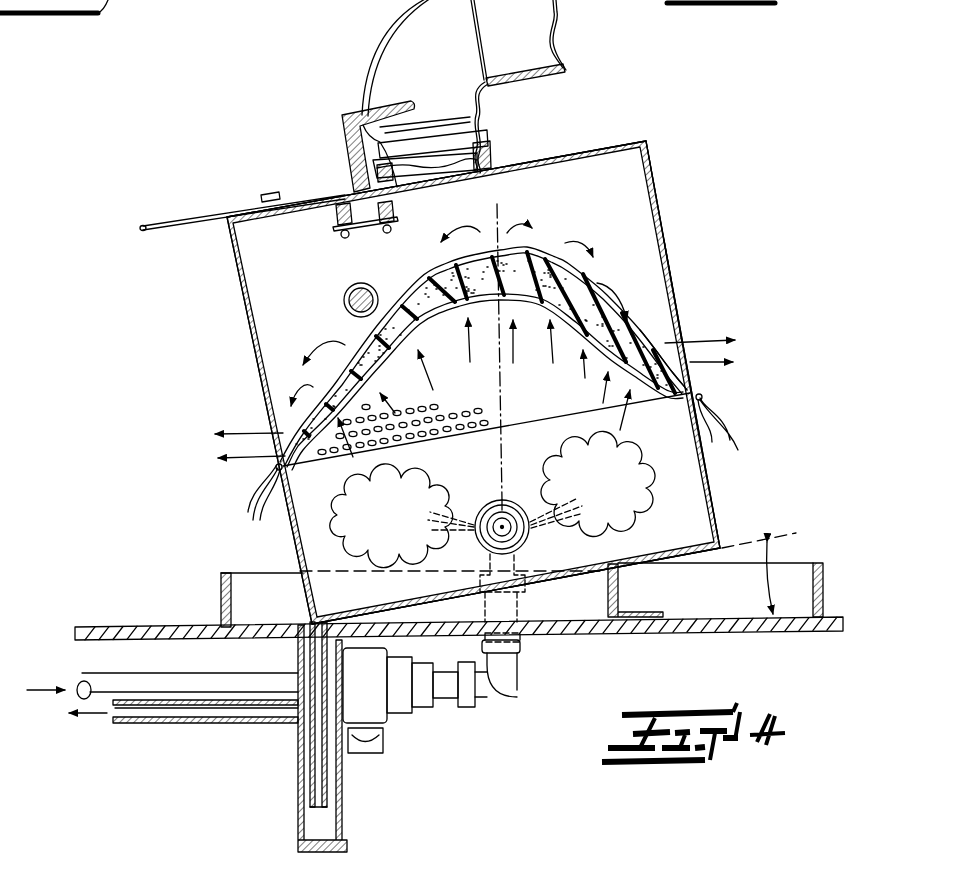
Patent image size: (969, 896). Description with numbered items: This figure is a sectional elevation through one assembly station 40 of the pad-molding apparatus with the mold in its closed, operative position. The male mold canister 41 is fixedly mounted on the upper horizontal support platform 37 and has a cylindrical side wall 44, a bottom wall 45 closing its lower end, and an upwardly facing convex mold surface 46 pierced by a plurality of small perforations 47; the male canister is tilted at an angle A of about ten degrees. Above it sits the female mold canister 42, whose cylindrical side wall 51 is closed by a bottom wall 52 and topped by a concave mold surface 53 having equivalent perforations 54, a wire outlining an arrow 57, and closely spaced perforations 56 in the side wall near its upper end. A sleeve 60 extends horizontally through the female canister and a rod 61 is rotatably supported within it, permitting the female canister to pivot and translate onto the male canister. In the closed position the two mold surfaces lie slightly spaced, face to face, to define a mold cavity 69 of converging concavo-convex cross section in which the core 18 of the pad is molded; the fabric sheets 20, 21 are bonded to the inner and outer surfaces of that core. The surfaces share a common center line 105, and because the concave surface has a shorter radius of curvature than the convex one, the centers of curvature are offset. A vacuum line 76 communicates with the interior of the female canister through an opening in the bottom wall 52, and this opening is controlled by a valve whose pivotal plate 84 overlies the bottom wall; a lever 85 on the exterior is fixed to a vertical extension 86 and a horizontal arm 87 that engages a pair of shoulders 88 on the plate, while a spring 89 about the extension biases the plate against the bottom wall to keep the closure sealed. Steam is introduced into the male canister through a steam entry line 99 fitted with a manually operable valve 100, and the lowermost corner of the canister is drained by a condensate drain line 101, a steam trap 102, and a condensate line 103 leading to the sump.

The core 18 is at (603, 280).
The sheet of fabric material 20 is at (722, 440).
The sheet of fabric material 21 is at (716, 403).
The upper horizontal support platform 37 is at (843, 617).
The assembly station 40 is at (770, 319).
The male mold canister 41 is at (722, 469).
The female mold canister 42 is at (670, 228).
The cylindrical side wall 44 is at (712, 503).
The bottom wall 45 is at (696, 553).
The convex mold surface 46 is at (577, 338).
The perforations 47 is at (420, 328).
The cylindrical side wall 51 is at (681, 273).
The bottom wall 52 is at (620, 160).
The concave mold surface 53 is at (422, 268).
The perforations 54 is at (362, 342).
The perforations 56 is at (690, 352).
The arrow 57 is at (654, 340).
The sleeve 60 is at (346, 292).
The rod 61 is at (346, 304).
The mold cavity 69 is at (538, 258).
The vacuum line 76 is at (556, 42).
The pivotal plate 84 is at (527, 182).
The lever 85 is at (233, 211).
The vertical extension 86 is at (338, 214).
The horizontal arm 87 is at (355, 228).
The shoulders 88 is at (388, 210).
The spring 89 is at (340, 228).
The steam entry line 99 is at (207, 690).
The manually operable valve 100 is at (365, 710).
The condensate drain line 101 is at (312, 750).
The steam trap 102 is at (300, 792).
The condensate line 103 is at (207, 720).
The common center line 105 is at (497, 222).
The angle A is at (782, 575).